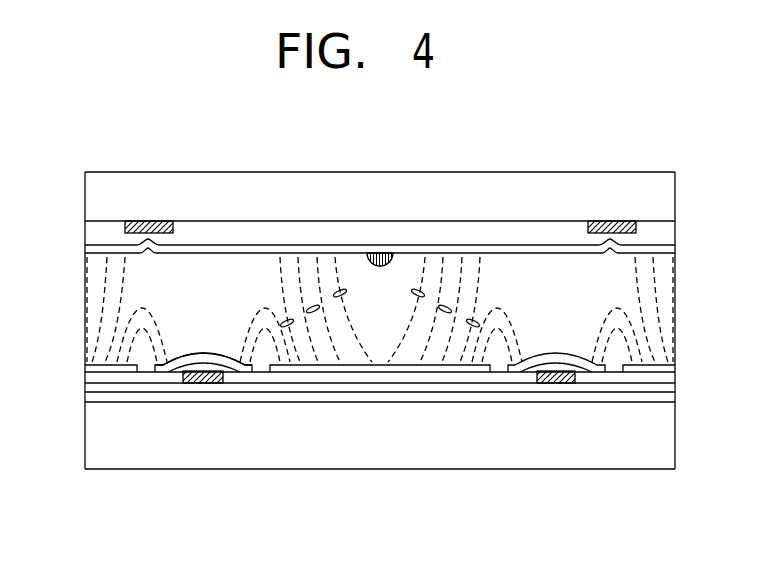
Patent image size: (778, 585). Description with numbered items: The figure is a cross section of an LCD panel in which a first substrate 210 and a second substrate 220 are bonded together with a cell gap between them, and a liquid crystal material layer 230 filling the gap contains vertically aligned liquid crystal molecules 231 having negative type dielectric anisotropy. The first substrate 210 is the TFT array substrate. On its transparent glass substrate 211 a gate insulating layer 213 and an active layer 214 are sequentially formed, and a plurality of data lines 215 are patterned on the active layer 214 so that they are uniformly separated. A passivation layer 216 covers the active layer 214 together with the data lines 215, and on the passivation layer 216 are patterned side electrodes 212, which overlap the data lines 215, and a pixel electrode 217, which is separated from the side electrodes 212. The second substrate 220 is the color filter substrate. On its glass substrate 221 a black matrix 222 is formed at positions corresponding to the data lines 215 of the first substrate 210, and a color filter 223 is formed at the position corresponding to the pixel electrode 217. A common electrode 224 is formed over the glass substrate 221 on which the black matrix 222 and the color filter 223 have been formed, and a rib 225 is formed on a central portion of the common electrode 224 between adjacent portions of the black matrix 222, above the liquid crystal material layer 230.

The first substrate 210 is at (73, 377).
The transparent glass substrate 211 is at (487, 437).
The side electrodes 212 is at (165, 368).
The gate insulating layer 213 is at (421, 398).
The active layer 214 is at (382, 389).
The data line 215 is at (206, 378).
The passivation layer 216 is at (344, 377).
The pixel electrode 217 is at (303, 366).
The second substrate 220 is at (73, 173).
The glass substrate 221 is at (232, 193).
The black matrix 222 is at (146, 221).
The color filter 223 is at (280, 232).
The common electrode 224 is at (326, 247).
The rib 225 is at (378, 253).
The liquid crystal material layer 230 is at (73, 260).
The liquid crystal molecules 231 is at (445, 307).